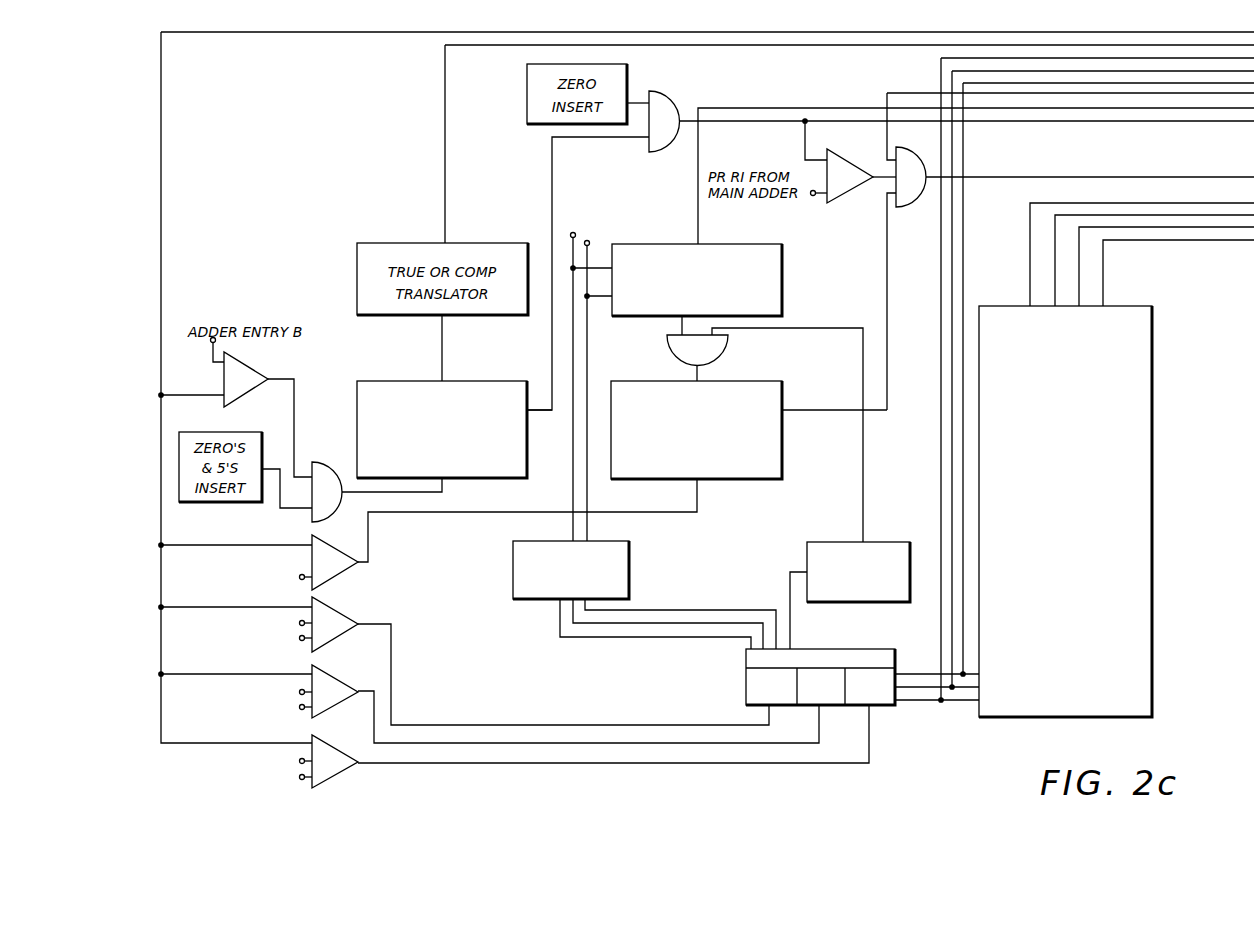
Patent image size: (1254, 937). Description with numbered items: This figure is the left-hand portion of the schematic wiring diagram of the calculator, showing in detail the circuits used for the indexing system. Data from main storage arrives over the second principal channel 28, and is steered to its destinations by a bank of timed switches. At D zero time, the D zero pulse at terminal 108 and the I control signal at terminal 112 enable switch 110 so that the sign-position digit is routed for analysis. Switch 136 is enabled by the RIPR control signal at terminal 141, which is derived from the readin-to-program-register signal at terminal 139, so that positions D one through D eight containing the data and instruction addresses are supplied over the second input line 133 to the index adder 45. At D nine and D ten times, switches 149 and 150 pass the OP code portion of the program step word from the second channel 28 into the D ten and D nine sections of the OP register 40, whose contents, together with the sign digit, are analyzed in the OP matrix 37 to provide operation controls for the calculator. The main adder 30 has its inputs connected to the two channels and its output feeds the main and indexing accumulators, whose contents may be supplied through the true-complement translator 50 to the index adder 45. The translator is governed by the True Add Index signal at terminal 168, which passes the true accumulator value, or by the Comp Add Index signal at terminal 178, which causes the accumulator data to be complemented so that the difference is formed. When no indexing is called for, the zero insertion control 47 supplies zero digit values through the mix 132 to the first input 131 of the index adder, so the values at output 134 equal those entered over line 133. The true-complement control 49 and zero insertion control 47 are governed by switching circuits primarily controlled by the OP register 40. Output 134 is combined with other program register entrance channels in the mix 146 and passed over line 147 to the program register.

The channel 2 28 is at (161, 126).
The main adder 30 is at (403, 381).
The true-complement translator 50 is at (680, 244).
The terminal (True Add Index) 168 is at (574, 232).
The terminal (Comp Add Index) 178 is at (586, 240).
The mix 146 is at (920, 204).
The line 147 is at (1055, 178).
The mix 132 is at (668, 352).
The input of index adder 131 is at (699, 374).
The index adder 45 is at (653, 481).
The output of index adder 134 is at (846, 410).
The second input line of index adder 133 is at (699, 495).
The true-complement control 49 is at (556, 600).
The zero insertion control 47 is at (843, 602).
The OP register 40 is at (766, 706).
The OP matrix 37 is at (1023, 718).
The switch 136 is at (322, 583).
The terminal (RIPR) 141 is at (302, 580).
The switch 110 is at (331, 640).
The terminal (I control) 112 is at (302, 626).
The terminal (D0) 108 is at (302, 641).
The switch 150 is at (326, 722).
The terminal (RIPR FR CH2) 139 is at (301, 710).
The switch 149 is at (355, 783).